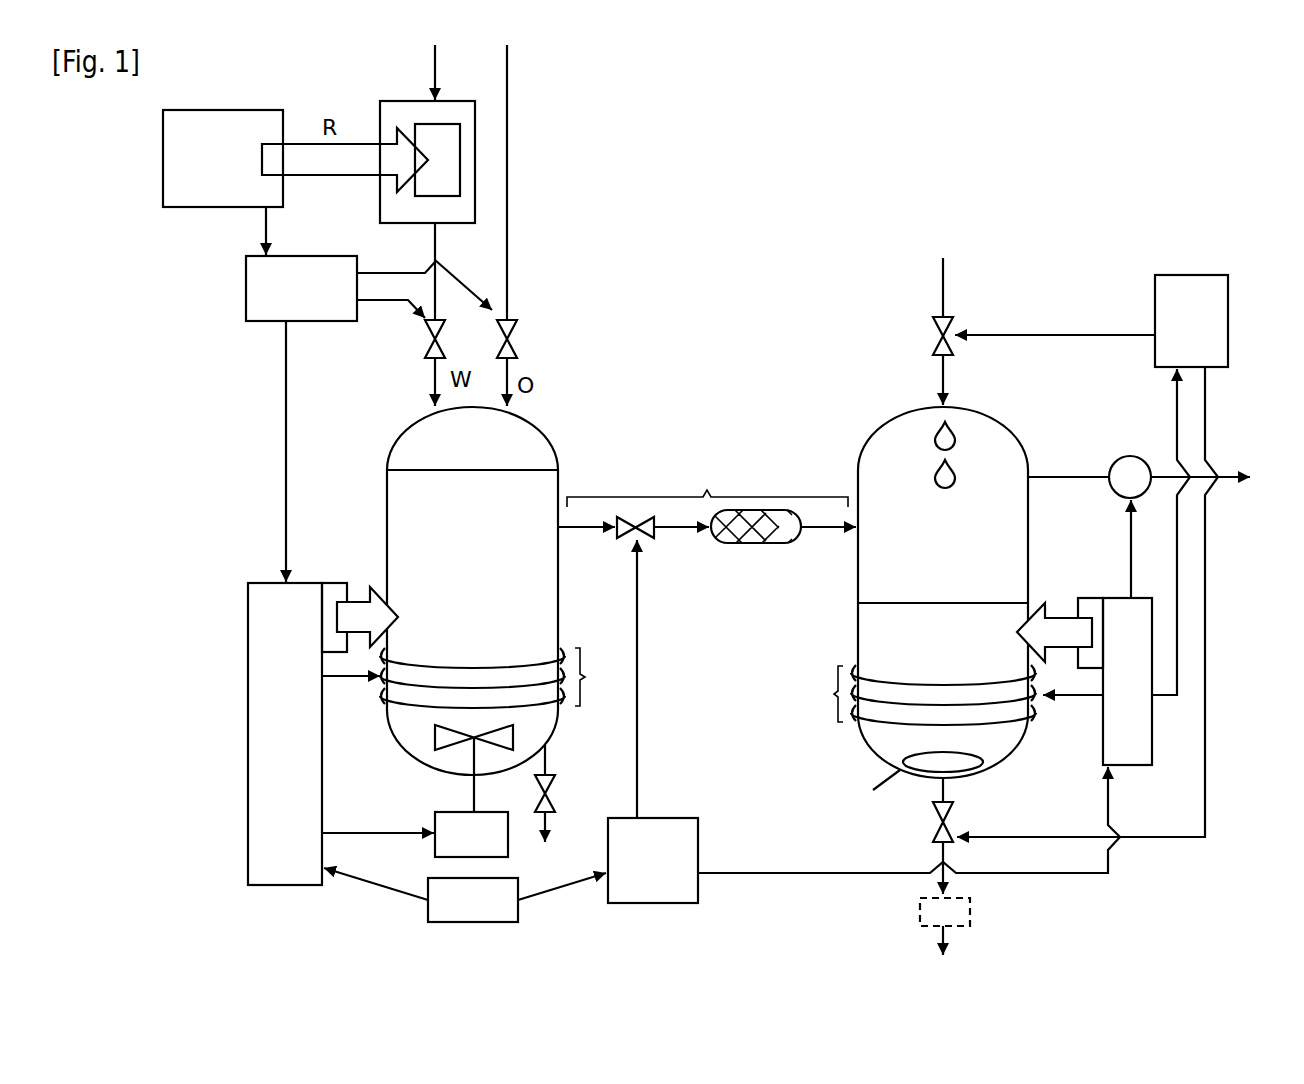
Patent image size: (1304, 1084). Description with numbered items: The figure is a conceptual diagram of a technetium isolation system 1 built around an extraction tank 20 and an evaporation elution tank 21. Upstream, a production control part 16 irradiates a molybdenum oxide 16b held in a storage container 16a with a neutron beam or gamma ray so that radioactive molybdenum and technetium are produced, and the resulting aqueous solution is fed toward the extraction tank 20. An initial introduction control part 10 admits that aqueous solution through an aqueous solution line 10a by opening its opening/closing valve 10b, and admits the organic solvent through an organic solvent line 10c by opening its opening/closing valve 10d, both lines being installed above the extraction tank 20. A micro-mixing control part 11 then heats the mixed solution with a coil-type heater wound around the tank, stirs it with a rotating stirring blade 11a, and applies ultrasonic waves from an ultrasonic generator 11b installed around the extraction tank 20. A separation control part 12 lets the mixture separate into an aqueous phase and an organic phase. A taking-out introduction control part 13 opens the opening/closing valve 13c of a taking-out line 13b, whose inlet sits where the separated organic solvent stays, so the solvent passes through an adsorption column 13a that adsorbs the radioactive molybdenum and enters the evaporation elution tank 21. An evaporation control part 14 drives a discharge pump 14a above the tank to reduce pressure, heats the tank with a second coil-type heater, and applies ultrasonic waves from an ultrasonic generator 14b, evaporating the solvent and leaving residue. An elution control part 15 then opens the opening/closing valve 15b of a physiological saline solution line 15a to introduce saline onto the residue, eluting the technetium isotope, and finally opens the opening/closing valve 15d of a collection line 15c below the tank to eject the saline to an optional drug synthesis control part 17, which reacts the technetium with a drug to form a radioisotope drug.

The technetium 99m isolation system 1 is at (165, 452).
The initial introduction control part 10 is at (293, 253).
The aqueous solution line 10a is at (430, 381).
The opening/closing valve 10b is at (432, 339).
The organic solvent line 10c is at (512, 378).
The opening/closing valve 10d is at (518, 319).
The micro-mixing control part 11 is at (257, 580).
The stirring blade 11a is at (437, 741).
The ultrasonic generator 11b is at (336, 581).
The separation control part 12 is at (425, 922).
The taking-out introduction control part 13 is at (668, 815).
The adsorption column 13a is at (707, 509).
The taking-out line 13b is at (651, 536).
The opening/closing valve 13c is at (753, 546).
The evaporation control part 14 is at (1130, 767).
The discharge pump 14a is at (1127, 454).
The ultrasonic generator 14b is at (1092, 595).
The elution control part 15 is at (1182, 273).
The physiological saline solution line 15a is at (947, 377).
The opening/closing valve 15b is at (948, 321).
The collection line 15c is at (942, 790).
The opening/closing valve 15d is at (951, 818).
The production control part 16 is at (210, 109).
The storage container 16a is at (390, 98).
The molybdenum oxide 16b is at (460, 162).
The drug synthesis control part 17 is at (975, 908).
The extraction tank 20 is at (549, 437).
The evaporation elution tank 21 is at (1000, 422).